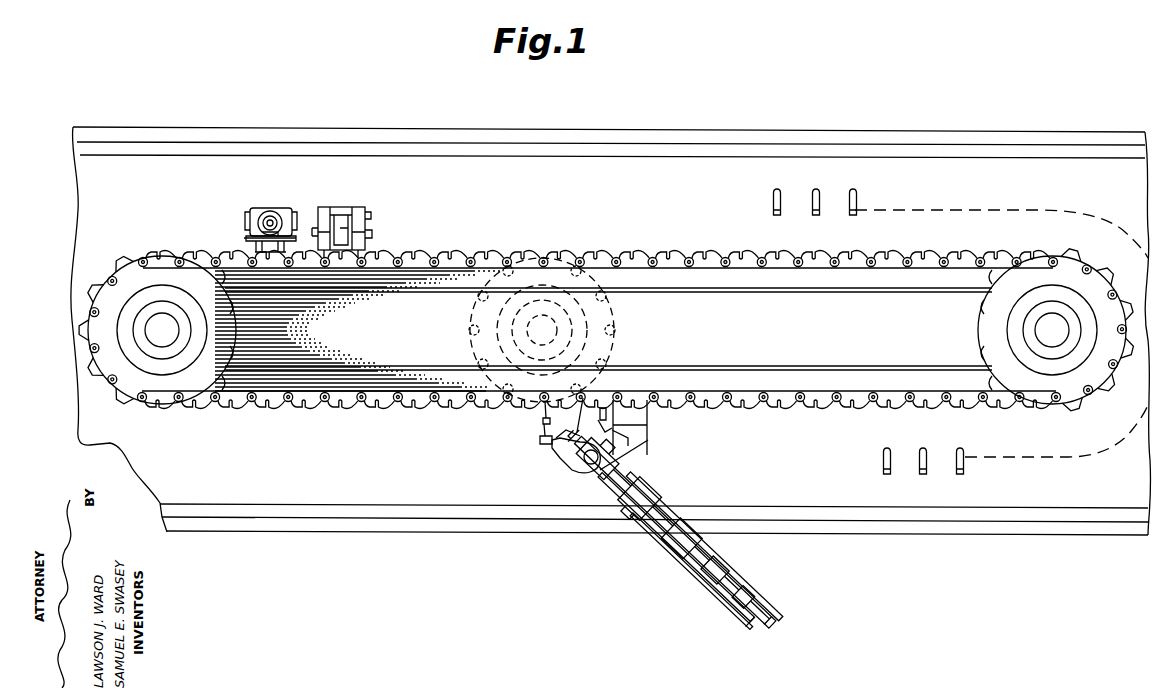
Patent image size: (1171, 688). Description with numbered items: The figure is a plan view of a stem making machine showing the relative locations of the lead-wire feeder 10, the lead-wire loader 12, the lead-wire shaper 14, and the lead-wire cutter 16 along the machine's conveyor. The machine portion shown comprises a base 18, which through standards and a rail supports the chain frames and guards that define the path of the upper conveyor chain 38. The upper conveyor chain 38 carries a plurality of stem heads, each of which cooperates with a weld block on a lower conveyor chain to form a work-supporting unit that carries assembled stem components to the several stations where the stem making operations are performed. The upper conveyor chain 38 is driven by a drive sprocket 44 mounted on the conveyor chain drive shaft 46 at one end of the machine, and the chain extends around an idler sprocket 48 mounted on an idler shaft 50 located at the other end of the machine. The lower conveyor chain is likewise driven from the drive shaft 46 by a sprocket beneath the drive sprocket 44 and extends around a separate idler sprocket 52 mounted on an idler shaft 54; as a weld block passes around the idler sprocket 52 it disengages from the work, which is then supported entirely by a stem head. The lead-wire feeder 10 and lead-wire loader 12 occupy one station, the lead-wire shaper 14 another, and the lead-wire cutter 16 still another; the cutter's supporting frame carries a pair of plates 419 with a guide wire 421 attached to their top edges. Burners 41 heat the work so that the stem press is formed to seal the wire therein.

The lead-wire feeder 10 is at (662, 479).
The lead-wire loader 12 is at (556, 463).
The lead-wire shaper 14 is at (363, 206).
The lead-wire cutter 16 is at (252, 214).
The base 18 is at (865, 488).
The upper conveyor chain 38 is at (538, 233).
The burners 41 is at (852, 196).
The drive sprocket 44 is at (190, 372).
The conveyor chain drive shaft 46 is at (160, 325).
The idler sprocket 48 is at (990, 314).
The idler shaft 50 is at (1044, 335).
The idler sprocket 52 is at (608, 338).
The idler shaft 54 is at (558, 330).
The plates 419 is at (252, 214).
The guide wire 421 is at (243, 199).